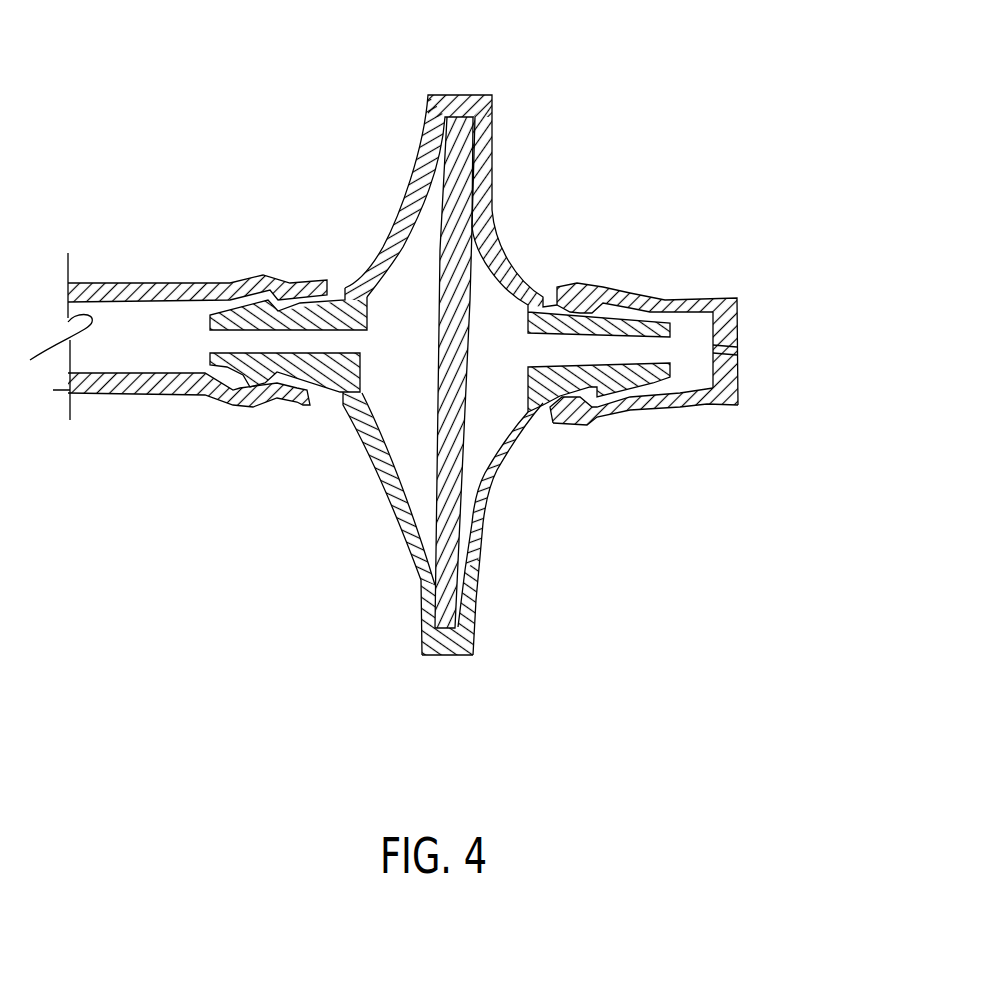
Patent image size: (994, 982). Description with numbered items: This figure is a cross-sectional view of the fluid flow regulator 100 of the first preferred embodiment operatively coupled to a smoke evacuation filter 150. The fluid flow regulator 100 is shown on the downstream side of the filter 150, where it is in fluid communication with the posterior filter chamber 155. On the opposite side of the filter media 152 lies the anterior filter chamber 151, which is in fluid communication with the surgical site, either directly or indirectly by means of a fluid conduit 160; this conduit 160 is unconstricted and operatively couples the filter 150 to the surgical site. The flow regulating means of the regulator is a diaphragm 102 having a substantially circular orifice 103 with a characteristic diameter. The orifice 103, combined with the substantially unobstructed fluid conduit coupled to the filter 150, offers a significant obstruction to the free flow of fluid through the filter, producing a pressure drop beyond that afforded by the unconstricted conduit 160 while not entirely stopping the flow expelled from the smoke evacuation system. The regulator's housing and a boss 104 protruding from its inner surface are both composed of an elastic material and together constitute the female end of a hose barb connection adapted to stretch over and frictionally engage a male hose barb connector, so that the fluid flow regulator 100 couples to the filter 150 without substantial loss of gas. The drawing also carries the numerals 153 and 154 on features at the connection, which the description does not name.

The fluid flow regulator 100 is at (683, 295).
The diaphragm 102 is at (740, 382).
The orifice 103 is at (730, 352).
The boss 104 is at (583, 298).
The filter 150 is at (463, 93).
The anterior filter chamber 151 is at (410, 440).
The filter media 152 is at (450, 197).
The left port barb 153 is at (246, 370).
The right lower barb 154 is at (625, 383).
The posterior filter chamber 155 is at (480, 443).
The fluid conduit 160 is at (193, 282).